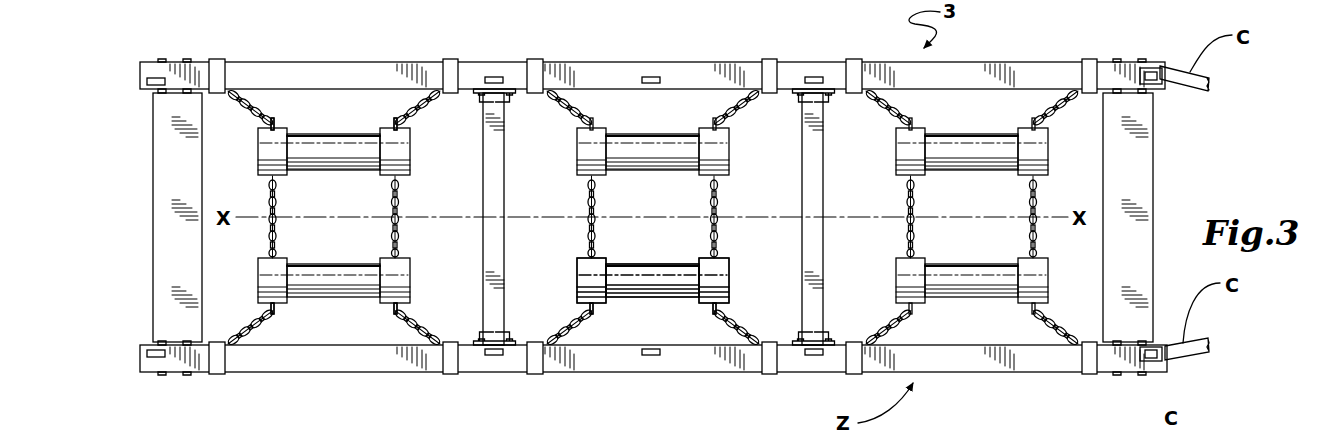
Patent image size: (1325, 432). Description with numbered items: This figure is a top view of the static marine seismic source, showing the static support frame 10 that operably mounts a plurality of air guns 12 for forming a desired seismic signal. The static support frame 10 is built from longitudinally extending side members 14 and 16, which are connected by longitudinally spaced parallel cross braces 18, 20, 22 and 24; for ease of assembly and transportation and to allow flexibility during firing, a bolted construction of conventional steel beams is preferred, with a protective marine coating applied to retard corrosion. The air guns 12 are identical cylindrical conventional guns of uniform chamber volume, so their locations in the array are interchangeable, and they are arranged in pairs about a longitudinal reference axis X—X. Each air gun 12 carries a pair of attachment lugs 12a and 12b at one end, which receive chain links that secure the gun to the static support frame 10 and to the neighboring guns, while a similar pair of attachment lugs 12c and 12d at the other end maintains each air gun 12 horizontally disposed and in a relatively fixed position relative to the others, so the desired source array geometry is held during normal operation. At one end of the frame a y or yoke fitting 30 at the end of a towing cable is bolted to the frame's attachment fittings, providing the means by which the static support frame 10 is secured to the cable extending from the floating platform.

The static support frame 10 is at (250, 378).
The air gun 12 is at (675, 292).
The attachment lug 12a is at (278, 306).
The attachment lug 12b is at (276, 128).
The attachment lug 12c is at (392, 306).
The attachment lug 12d is at (392, 128).
The side member 14 is at (1033, 360).
The side member 16 is at (1032, 62).
The cross brace 18 is at (1152, 182).
The cross brace 20 is at (807, 252).
The cross brace 22 is at (488, 252).
The cross brace 24 is at (157, 233).
The yoke fitting 30 is at (1160, 86).